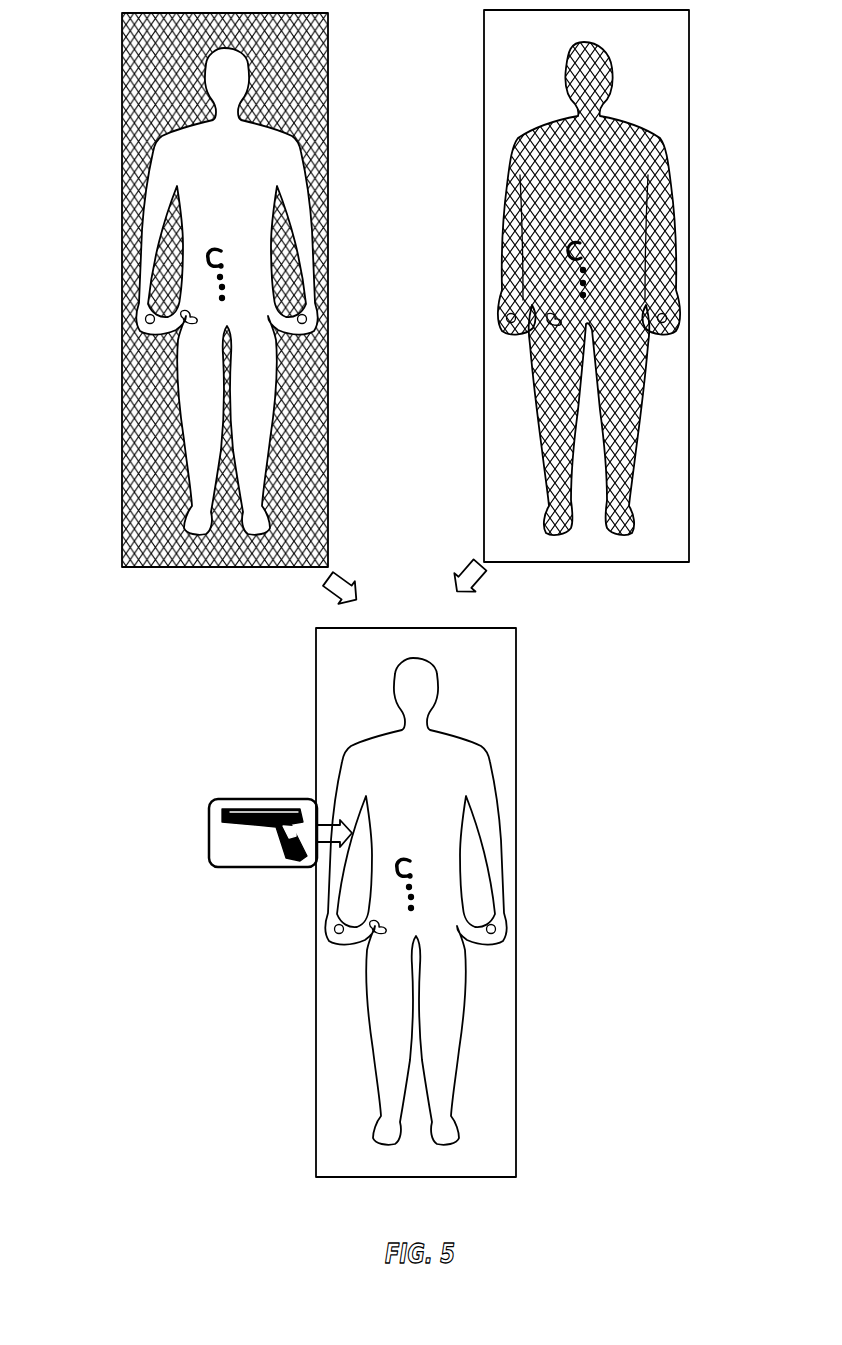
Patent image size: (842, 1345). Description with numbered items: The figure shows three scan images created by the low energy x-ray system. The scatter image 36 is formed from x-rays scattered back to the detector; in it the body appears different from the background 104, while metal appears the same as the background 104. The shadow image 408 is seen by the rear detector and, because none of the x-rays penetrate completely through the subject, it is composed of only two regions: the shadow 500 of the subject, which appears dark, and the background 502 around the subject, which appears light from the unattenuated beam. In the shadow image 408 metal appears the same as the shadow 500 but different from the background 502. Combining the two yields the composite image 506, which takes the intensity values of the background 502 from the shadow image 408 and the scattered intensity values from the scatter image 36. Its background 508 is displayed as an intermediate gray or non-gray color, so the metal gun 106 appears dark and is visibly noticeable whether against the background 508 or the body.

The scatter image 36 is at (117, 203).
The background 104 is at (132, 60).
The metal gun 106 is at (232, 799).
The shadow image 408 is at (696, 372).
The shadow 500 is at (612, 118).
The background 502 is at (672, 42).
The composite image 506 is at (536, 1017).
The background 508 is at (494, 675).